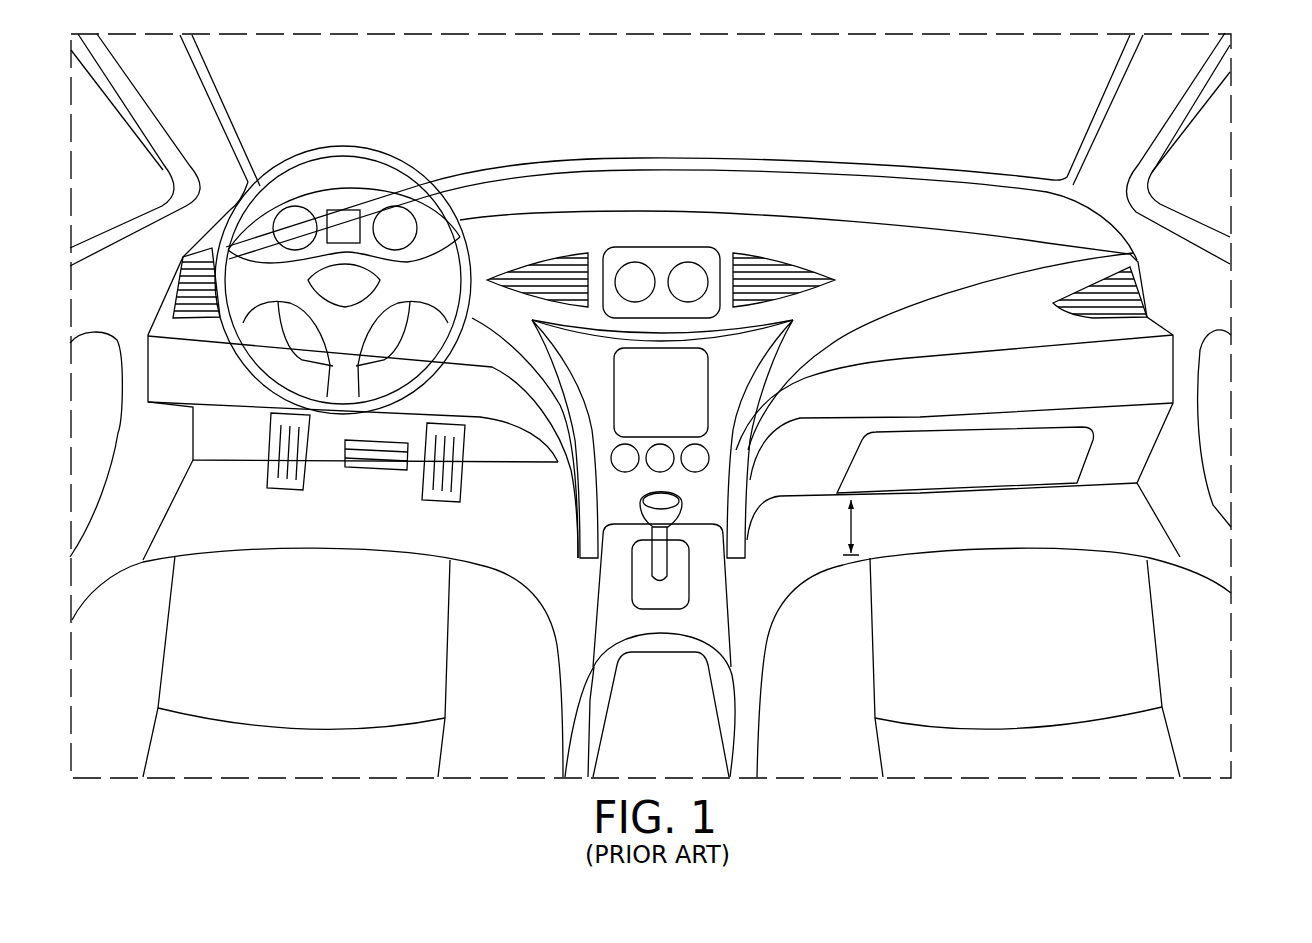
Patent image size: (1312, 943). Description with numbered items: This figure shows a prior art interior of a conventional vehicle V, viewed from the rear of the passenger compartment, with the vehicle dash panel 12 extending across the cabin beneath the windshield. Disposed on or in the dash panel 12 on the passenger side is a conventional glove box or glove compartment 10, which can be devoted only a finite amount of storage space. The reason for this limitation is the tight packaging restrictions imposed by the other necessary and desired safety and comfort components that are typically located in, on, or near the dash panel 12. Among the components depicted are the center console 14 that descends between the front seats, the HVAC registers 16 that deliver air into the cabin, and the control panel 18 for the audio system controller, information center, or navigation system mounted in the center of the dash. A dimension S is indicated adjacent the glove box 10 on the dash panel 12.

The glove box 10 is at (1017, 464).
The vehicle dash panel 12 is at (661, 186).
The center console 14 is at (832, 402).
The HVAC register 16 is at (552, 268).
The control panel 18 is at (684, 370).
The spacing dimension S is at (860, 524).
The vehicle V is at (1246, 172).